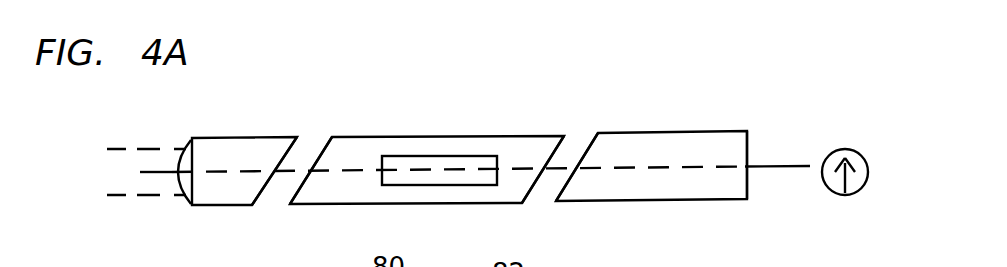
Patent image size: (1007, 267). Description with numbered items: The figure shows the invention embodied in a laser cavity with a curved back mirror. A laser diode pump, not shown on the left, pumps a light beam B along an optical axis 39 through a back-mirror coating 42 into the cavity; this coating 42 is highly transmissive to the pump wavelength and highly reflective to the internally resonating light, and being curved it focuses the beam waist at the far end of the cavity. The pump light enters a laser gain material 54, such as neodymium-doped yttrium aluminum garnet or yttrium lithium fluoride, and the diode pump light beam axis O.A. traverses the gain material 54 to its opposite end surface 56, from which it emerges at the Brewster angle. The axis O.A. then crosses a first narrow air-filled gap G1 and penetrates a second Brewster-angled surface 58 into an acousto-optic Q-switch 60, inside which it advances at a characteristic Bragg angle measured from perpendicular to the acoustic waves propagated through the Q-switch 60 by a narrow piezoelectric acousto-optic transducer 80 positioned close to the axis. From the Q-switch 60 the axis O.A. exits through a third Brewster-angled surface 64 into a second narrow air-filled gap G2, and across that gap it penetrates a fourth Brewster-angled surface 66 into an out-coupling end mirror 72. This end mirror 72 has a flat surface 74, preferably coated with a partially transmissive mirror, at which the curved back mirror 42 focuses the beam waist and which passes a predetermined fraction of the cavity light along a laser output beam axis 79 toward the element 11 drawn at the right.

The pump light beam B is at (145, 141).
The optical axis 39 is at (152, 173).
The back-mirror coating 42 is at (183, 138).
The laser gain material 54 is at (248, 136).
The opposite end surface 56 is at (293, 145).
The second Brewster-angled surface 58 is at (325, 150).
The acousto-optic Q-switch 60 is at (432, 166).
The third Brewster-angled surface 64 is at (566, 136).
The fourth Brewster-angled surface 66 is at (590, 150).
The out-coupling end mirror 72 is at (668, 132).
The flat surface 74 is at (752, 132).
The laser output beam axis 79 is at (768, 167).
The acousto-optic transducer 80 is at (425, 172).
The observer eye 11 is at (838, 150).
The first narrow gap G1 is at (276, 206).
The second narrow gap G2 is at (549, 196).
The diode pump light beam axis O.A. is at (785, 167).